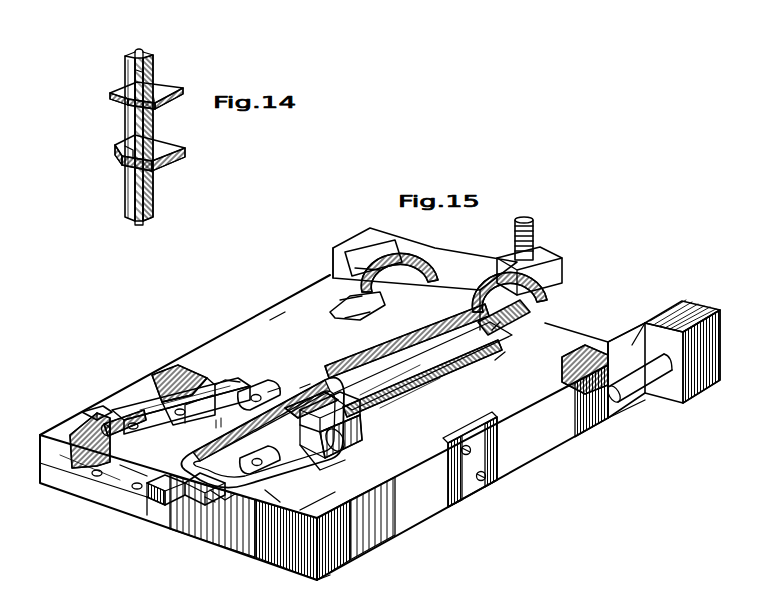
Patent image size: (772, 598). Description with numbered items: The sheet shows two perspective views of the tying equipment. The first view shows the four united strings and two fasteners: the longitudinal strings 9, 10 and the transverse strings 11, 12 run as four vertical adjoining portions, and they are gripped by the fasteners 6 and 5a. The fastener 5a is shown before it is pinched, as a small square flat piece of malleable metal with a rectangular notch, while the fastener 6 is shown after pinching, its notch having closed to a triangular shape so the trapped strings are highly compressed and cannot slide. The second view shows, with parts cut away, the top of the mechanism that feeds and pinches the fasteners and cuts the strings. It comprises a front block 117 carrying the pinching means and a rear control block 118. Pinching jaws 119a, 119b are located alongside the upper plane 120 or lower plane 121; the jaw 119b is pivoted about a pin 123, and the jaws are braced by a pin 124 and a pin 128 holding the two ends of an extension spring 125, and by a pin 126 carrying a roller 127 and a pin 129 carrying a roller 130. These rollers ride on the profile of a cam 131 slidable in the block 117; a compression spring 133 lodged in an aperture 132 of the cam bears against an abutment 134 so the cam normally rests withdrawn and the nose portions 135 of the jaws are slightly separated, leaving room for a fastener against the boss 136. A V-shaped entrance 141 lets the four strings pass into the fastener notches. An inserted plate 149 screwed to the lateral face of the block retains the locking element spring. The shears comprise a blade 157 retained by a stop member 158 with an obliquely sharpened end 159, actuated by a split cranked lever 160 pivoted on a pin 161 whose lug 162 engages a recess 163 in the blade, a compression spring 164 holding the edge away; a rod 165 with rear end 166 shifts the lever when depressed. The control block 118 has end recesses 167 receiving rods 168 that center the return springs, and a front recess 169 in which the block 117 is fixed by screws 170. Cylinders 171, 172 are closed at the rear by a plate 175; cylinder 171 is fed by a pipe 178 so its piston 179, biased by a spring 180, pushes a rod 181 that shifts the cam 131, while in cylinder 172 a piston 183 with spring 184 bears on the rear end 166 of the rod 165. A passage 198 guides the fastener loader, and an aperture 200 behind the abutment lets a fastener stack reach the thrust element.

In FIG. 14, the longitudinal string 9 is at (130, 55).
In FIG. 14, the longitudinal string 10 is at (152, 56).
In FIG. 14, the transverse string 11 is at (140, 50).
In FIG. 14, the transverse string 12 is at (140, 72).
In FIG. 14, the fastener 5a is at (177, 82).
In FIG. 14, the fastener 6 is at (180, 147).
In FIG. 15, the front block 117 is at (277, 321).
In FIG. 15, the rear control block 118 is at (670, 293).
In FIG. 15, the pinching jaw 119a is at (235, 383).
In FIG. 15, the pinching jaw 119b is at (348, 453).
In FIG. 15, the upper plane 120 is at (348, 500).
In FIG. 15, the lower plane 121 is at (345, 572).
In FIG. 15, the pin 123 is at (278, 503).
In FIG. 15, the pin 124 is at (212, 392).
In FIG. 15, the extension spring 125 is at (275, 470).
In FIG. 15, the pin 126 is at (254, 395).
In FIG. 15, the roller 127 is at (272, 390).
In FIG. 15, the pin 128 is at (330, 470).
In FIG. 15, the pin 129 is at (348, 411).
In FIG. 15, the roller 130 is at (358, 433).
In FIG. 15, the cam 131 is at (300, 400).
In FIG. 15, the aperture 132 is at (440, 362).
In FIG. 15, the compression spring 133 is at (420, 386).
In FIG. 15, the abutment 134 is at (352, 362).
In FIG. 15, the nose portions 135 is at (217, 492).
In FIG. 15, the boss 136 is at (210, 500).
In FIG. 15, the V-shaped entrance 141 is at (160, 508).
In FIG. 15, the inserted plate 149 is at (492, 480).
In FIG. 15, the blade 157 is at (150, 473).
In FIG. 15, the stop member 158 is at (107, 478).
In FIG. 15, the sharpened end 159 is at (187, 508).
In FIG. 15, the split cranked lever 160 is at (135, 410).
In FIG. 15, the pin 161 is at (165, 406).
In FIG. 15, the lug 162 is at (88, 418).
In FIG. 15, the recess 163 is at (78, 432).
In FIG. 15, the compression spring 164 is at (135, 425).
In FIG. 15, the rod 165 is at (183, 375).
In FIG. 15, the rear end 166 is at (325, 306).
In FIG. 15, the recess 167 is at (670, 393).
In FIG. 15, the rod 168 is at (628, 392).
In FIG. 15, the recess 169 is at (632, 345).
In FIG. 15, the screws 170 is at (582, 365).
In FIG. 15, the cylinder 171 is at (490, 275).
In FIG. 15, the cylinder 172 is at (440, 265).
In FIG. 15, the plate 175 is at (430, 253).
In FIG. 15, the pipe 178 is at (535, 237).
In FIG. 15, the piston 179 is at (540, 263).
In FIG. 15, the spring 180 is at (492, 330).
In FIG. 15, the rod 181 is at (495, 360).
In FIG. 15, the piston 183 is at (385, 270).
In FIG. 15, the spring 184 is at (355, 268).
In FIG. 15, the passage 198 is at (303, 385).
In FIG. 15, the aperture 200 is at (235, 490).